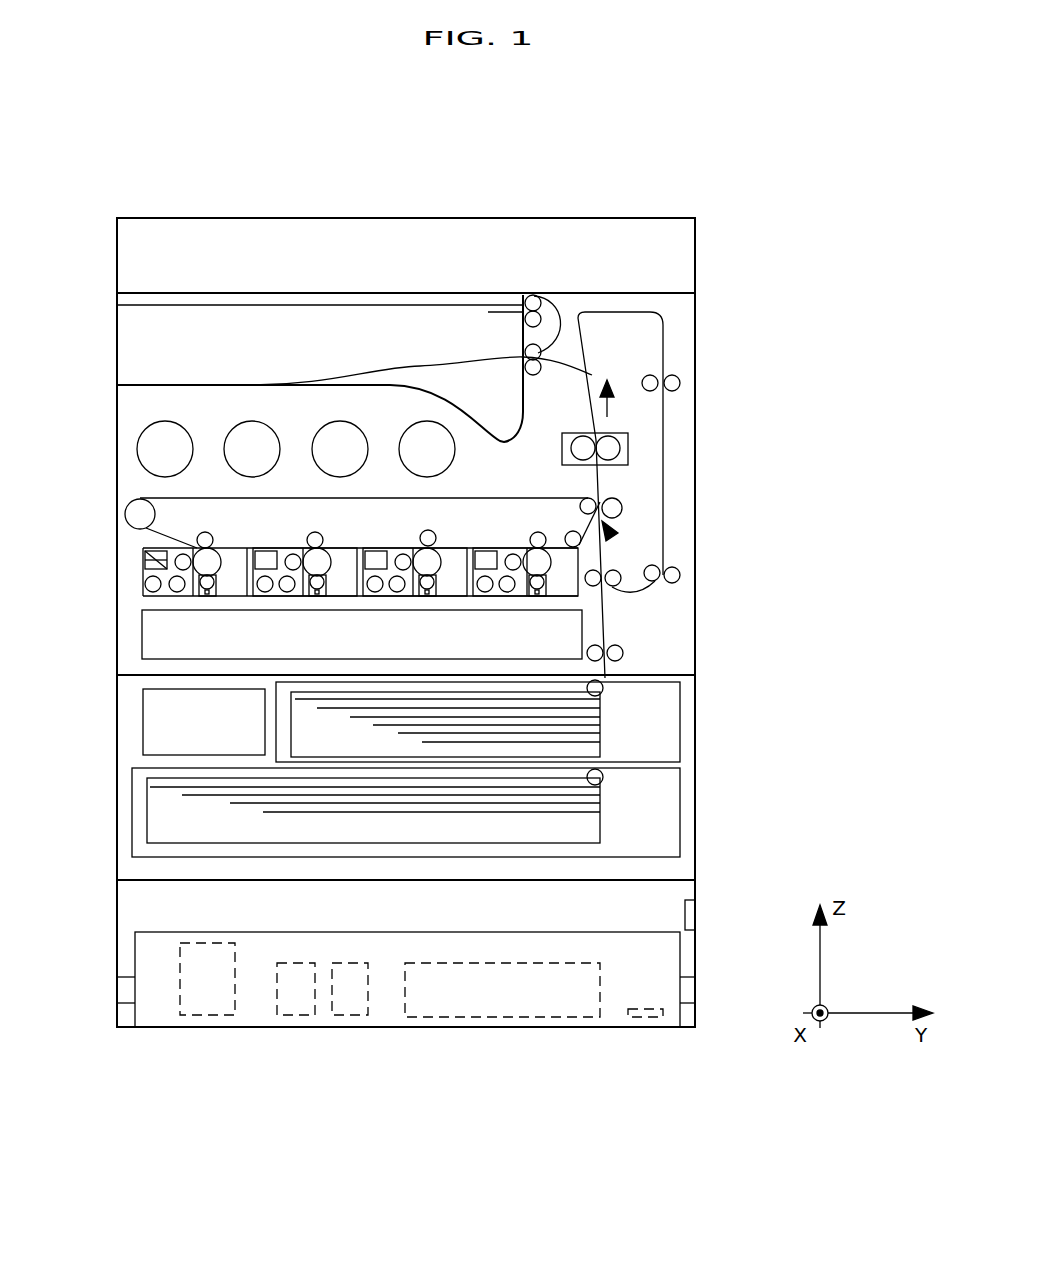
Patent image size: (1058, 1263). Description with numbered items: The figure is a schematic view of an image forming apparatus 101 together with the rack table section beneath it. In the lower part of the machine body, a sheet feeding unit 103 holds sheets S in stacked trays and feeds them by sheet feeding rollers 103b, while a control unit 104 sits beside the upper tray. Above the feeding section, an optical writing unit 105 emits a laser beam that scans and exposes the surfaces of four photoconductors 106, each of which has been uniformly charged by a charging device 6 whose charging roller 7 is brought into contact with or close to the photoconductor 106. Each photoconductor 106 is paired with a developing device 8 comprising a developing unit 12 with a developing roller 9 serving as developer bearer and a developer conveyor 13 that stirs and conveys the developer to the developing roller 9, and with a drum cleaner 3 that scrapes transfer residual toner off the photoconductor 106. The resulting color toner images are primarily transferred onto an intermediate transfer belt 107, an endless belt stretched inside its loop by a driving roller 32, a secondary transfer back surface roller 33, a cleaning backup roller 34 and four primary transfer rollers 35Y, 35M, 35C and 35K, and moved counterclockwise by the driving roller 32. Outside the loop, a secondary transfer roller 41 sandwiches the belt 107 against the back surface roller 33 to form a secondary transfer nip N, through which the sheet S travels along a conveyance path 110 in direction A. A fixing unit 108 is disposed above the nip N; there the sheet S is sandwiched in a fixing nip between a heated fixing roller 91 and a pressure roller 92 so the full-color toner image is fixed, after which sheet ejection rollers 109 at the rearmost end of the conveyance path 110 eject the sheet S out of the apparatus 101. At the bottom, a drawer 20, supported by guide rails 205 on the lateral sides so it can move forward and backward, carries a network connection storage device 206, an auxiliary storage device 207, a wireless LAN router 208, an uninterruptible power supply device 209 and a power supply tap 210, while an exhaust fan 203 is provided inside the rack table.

The image forming apparatus 101 is at (130, 205).
The sheet S is at (408, 372).
The sheet ejection rollers 109 is at (533, 297).
The sheet conveyance direction A is at (606, 418).
The fixing unit 108 is at (573, 440).
The fixing roller 91 is at (572, 437).
The pressure roller 92 is at (618, 437).
The intermediate transfer belt 107 is at (351, 509).
The driving roller 32 is at (128, 514).
The secondary transfer back surface roller 33 is at (583, 501).
The cleaning backup roller 34 is at (586, 543).
The secondary transfer roller 41 is at (618, 503).
The secondary transfer nip N is at (615, 532).
The photoconductor 106 is at (217, 555).
The developing device 8 is at (134, 578).
The developing unit 12 is at (165, 556).
The developing roller 9 is at (176, 563).
The developer conveyor 13 is at (147, 587).
The drum cleaner 3 is at (236, 596).
The charging roller 7 is at (206, 591).
The charging device 6 is at (216, 601).
The primary transfer roller 35Y is at (225, 518).
The primary transfer roller 35C is at (335, 516).
The primary transfer roller 35M is at (442, 516).
The primary transfer roller 35K is at (553, 516).
The optical writing unit 105 is at (142, 647).
The conveyance path 110 is at (606, 612).
The control unit 104 is at (143, 722).
The sheet feeding unit 103 is at (266, 711).
The sheet feeding rollers 103b is at (601, 692).
The drawer 20 is at (390, 932).
The exhaust fan 203 is at (697, 905).
The guide rails 205 is at (122, 990).
The network connection storage device 206 is at (212, 1016).
The auxiliary storage device 207 is at (298, 1016).
The wireless LAN router 208 is at (358, 1016).
The uninterruptible power supply device 209 is at (500, 1018).
The power supply tap 210 is at (645, 1018).